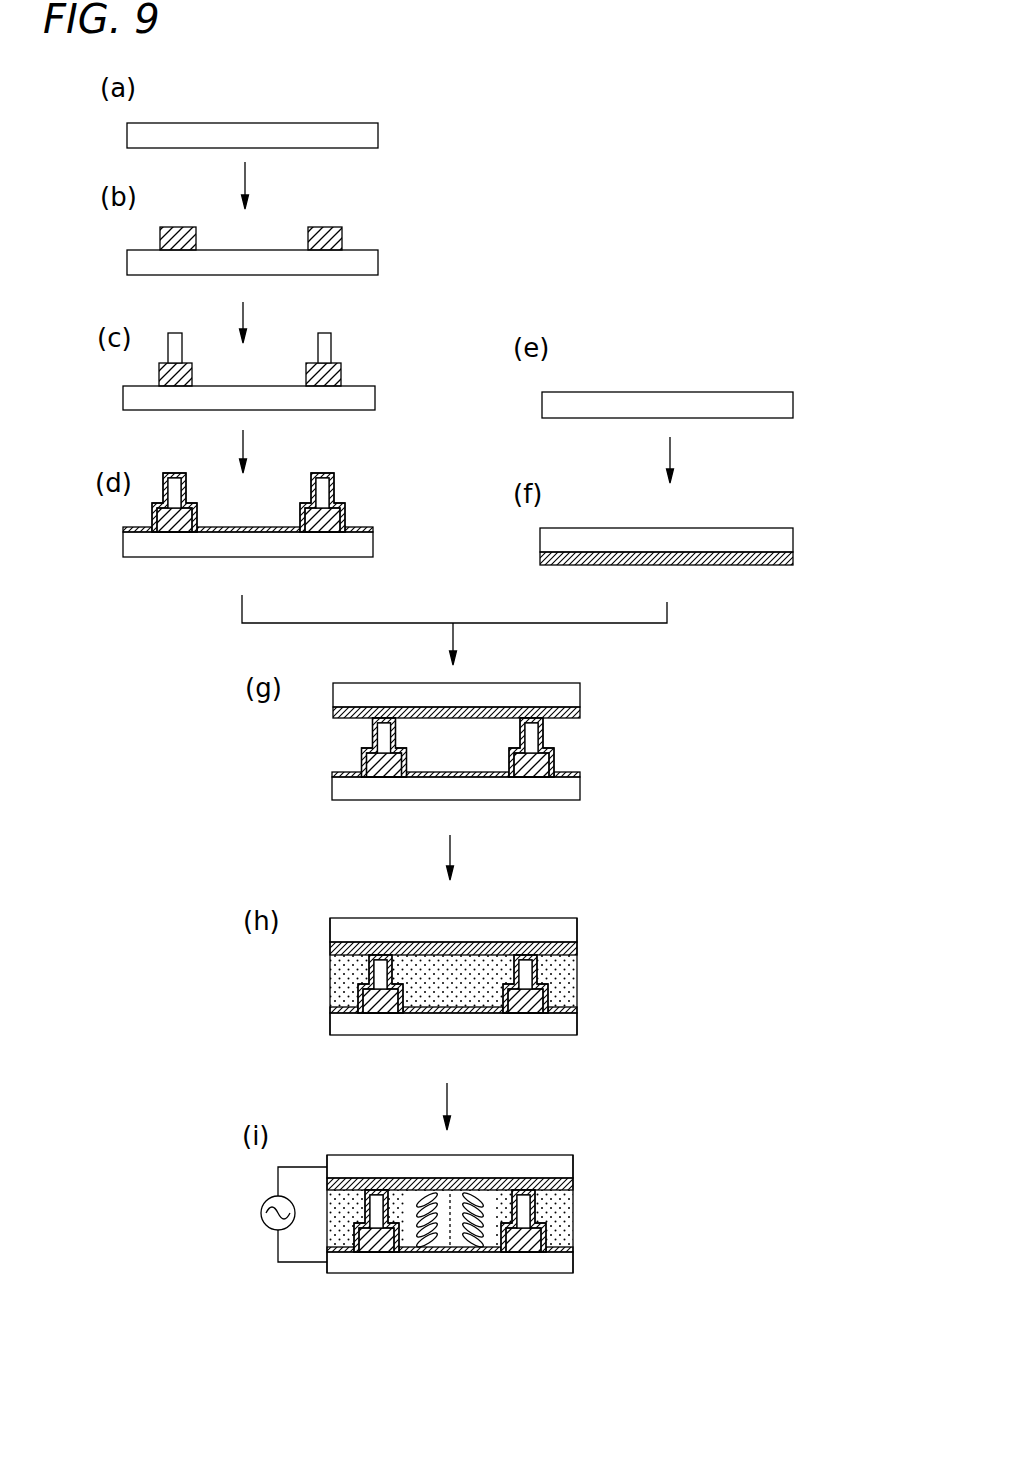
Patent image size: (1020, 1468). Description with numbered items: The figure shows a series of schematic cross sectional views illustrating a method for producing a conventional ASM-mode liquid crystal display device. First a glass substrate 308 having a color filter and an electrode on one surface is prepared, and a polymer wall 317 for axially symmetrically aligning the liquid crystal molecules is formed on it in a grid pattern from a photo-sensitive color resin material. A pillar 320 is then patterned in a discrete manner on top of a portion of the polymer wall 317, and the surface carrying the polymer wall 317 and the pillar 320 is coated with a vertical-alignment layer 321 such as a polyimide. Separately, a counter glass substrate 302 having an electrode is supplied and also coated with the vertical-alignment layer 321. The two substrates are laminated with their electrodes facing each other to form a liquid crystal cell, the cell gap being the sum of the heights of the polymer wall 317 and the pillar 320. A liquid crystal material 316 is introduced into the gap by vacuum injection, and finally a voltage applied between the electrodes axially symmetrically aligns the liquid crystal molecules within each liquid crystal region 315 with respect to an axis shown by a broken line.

The counter glass substrate 302 is at (785, 410).
The glass substrate 308 is at (368, 140).
The liquid crystal region 315 is at (460, 1258).
The liquid crystal material 316 is at (425, 995).
The polymer wall 317 is at (330, 234).
The pillar 320 is at (327, 333).
The vertical-alignment layer 321 is at (320, 475).